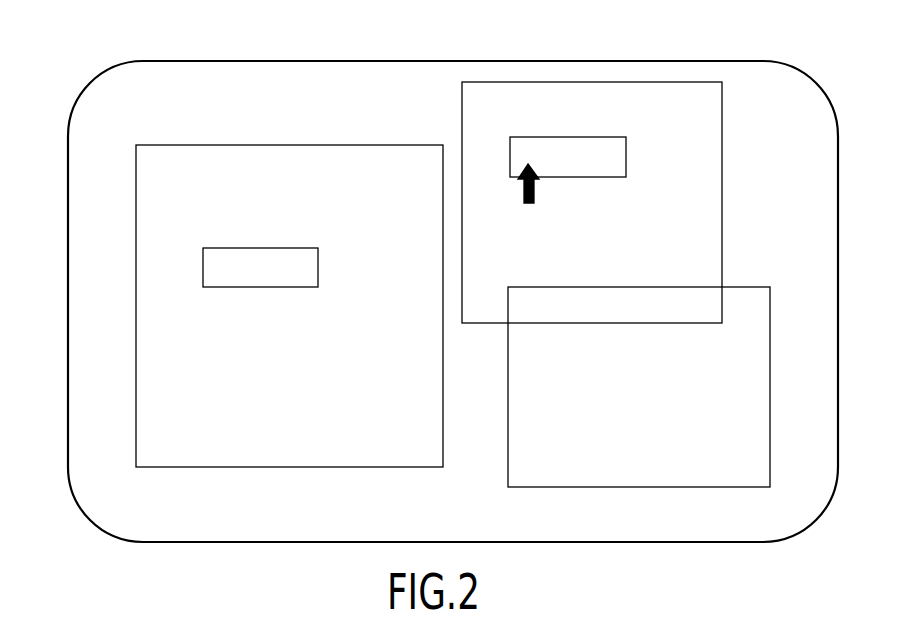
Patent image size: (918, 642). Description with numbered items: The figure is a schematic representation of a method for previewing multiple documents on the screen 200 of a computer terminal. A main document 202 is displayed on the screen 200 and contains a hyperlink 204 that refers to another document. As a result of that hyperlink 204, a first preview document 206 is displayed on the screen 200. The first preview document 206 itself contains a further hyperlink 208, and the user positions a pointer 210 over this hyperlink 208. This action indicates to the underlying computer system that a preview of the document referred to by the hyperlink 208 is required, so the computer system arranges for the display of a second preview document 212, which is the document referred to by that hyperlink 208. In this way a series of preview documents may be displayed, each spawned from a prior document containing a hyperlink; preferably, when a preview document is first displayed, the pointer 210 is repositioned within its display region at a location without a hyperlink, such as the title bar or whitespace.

The screen 200 is at (66, 74).
The main document 202 is at (246, 467).
The hyperlink 204 is at (318, 272).
The first preview document 206 is at (722, 170).
The hyperlink 208 is at (626, 163).
The pointer 210 is at (520, 192).
The second preview document 212 is at (600, 488).